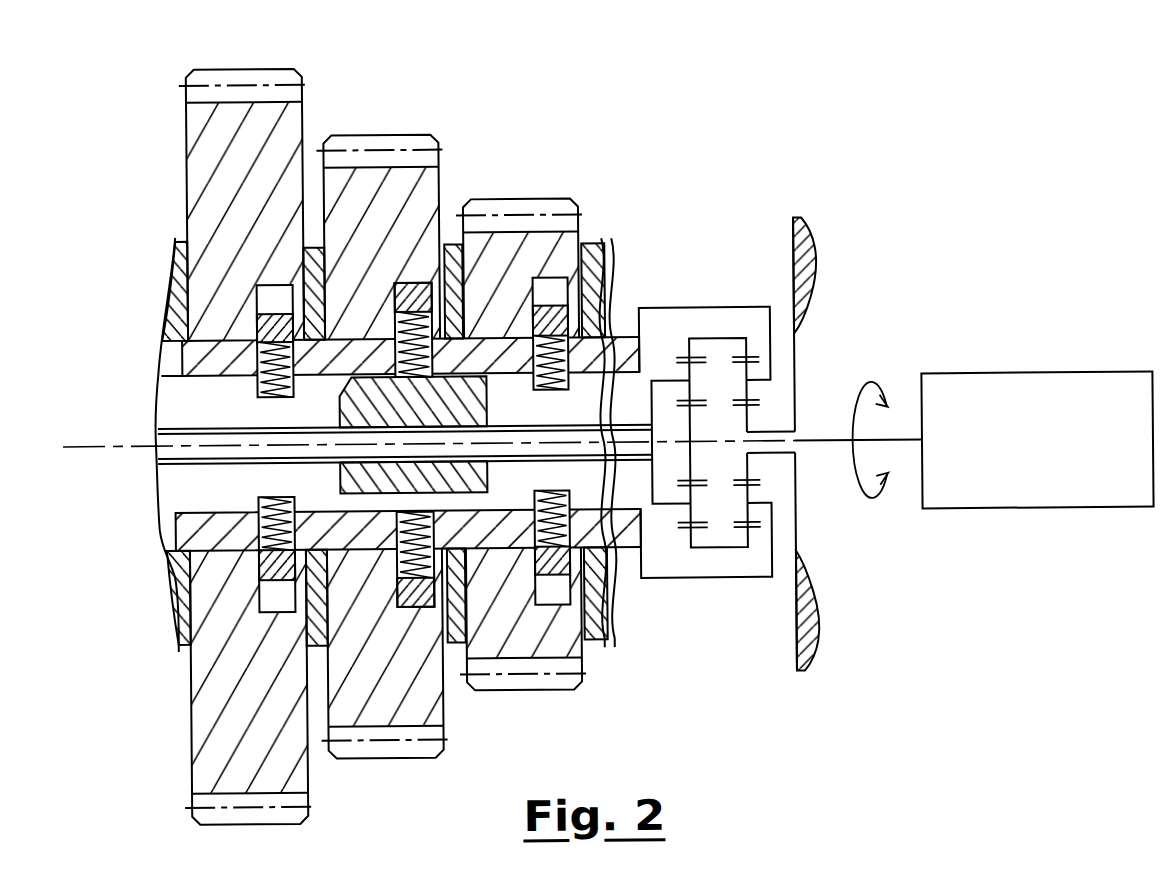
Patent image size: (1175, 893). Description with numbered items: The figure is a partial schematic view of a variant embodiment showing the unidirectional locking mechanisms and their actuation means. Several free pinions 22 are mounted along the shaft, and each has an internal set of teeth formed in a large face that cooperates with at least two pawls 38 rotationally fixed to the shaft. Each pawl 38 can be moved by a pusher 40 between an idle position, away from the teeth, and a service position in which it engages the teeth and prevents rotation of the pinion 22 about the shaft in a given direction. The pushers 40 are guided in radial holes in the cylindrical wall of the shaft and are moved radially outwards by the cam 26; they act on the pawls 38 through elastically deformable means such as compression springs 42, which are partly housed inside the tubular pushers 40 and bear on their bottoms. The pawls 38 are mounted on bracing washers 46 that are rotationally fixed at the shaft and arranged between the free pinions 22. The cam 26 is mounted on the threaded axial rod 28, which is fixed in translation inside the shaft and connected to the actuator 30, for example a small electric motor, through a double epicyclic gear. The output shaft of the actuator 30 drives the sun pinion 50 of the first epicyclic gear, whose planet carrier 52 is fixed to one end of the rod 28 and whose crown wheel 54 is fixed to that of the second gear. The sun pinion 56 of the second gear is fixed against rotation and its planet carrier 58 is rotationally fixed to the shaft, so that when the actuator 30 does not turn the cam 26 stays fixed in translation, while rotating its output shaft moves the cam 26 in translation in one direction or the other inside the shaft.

The free pinion 22 is at (290, 77).
The cam 26 is at (340, 418).
The rod 28 is at (206, 427).
The actuator 30 is at (1029, 377).
The pawl 38 is at (280, 290).
The pusher 40 is at (272, 397).
The compression spring 42 is at (548, 382).
The bracing washer 46 is at (451, 641).
The sun pinion 50 is at (690, 460).
The planet carrier 52 is at (663, 384).
The crown wheel 54 is at (717, 343).
The sun pinion 56 is at (749, 421).
The planet carrier 58 is at (721, 582).